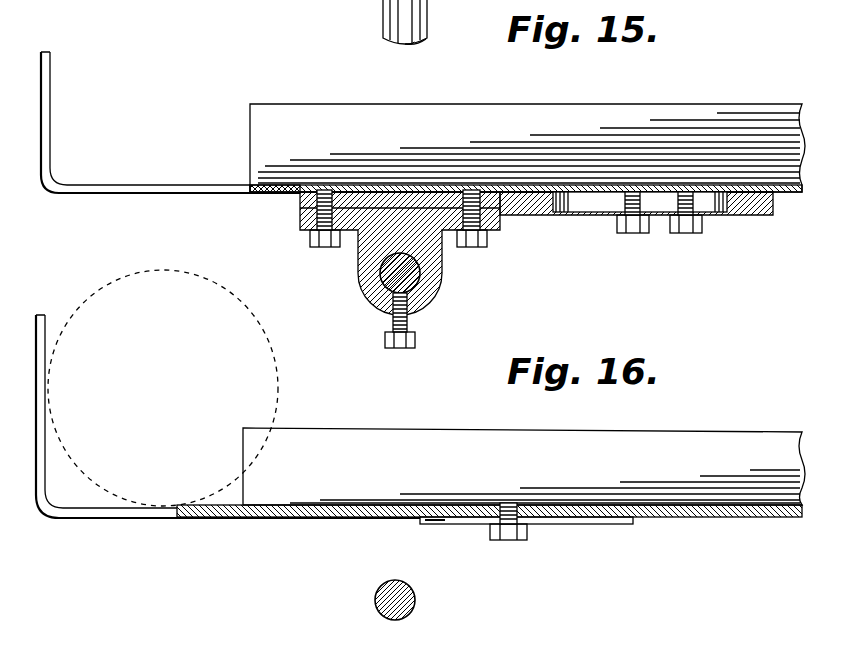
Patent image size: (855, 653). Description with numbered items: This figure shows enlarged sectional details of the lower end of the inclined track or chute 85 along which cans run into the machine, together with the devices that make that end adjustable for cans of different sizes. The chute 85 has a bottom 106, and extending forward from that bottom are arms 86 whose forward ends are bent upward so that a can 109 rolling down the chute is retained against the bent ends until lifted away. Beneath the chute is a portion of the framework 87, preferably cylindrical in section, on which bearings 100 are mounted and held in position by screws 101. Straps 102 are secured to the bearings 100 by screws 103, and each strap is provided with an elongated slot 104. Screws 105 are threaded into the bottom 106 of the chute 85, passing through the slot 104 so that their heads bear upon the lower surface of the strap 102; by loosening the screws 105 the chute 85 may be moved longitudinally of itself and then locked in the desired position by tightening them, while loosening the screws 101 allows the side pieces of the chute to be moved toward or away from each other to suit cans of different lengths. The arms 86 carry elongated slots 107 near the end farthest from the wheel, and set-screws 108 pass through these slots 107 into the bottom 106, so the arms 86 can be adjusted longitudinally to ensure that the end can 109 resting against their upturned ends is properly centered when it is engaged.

In FIG. 15, the inclined track or chute 85 is at (600, 120).
In FIG. 16, the inclined track or chute 85 is at (668, 462).
In FIG. 15, the arms 86 is at (178, 190).
In FIG. 16, the arms 86 is at (210, 497).
In FIG. 15, the rod of framework 87 is at (432, 292).
In FIG. 16, the rod of framework 87 is at (415, 598).
In FIG. 15, the bearings 100 is at (442, 268).
In FIG. 15, the screws 101 is at (415, 347).
In FIG. 15, the straps 102 is at (540, 215).
In FIG. 15, the screws 103 is at (505, 247).
In FIG. 15, the elongated slots 104 is at (640, 203).
In FIG. 15, the screws 105 is at (696, 245).
In FIG. 15, the bottom of chute 106 is at (660, 190).
In FIG. 16, the bottom of chute 106 is at (717, 522).
In FIG. 16, the elongated slots 107 is at (463, 524).
In FIG. 16, the set-screws 108 is at (512, 540).
In FIG. 16, the cans 109 is at (216, 292).